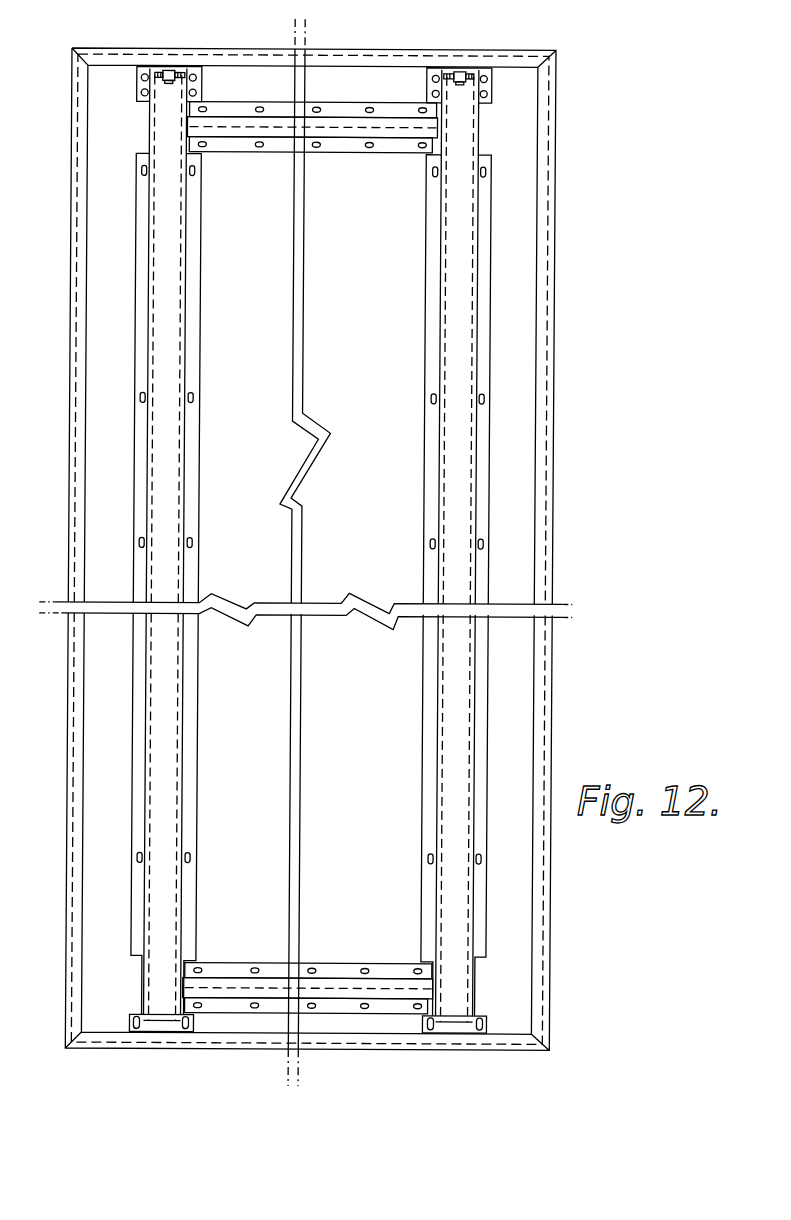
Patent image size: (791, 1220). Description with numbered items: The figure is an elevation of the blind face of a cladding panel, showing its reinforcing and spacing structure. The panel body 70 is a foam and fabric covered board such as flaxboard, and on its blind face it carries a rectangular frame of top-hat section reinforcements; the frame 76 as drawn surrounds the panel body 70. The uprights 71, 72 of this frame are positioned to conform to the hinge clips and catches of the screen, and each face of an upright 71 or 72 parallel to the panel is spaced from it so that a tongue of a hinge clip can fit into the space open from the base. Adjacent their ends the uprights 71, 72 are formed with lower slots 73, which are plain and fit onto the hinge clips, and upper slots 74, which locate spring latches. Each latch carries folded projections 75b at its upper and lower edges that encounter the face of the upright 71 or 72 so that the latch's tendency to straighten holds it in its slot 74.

The panel body 70 is at (389, 243).
The upright 71 is at (457, 440).
The upright 72 is at (172, 443).
The lower slot 73 is at (158, 1007).
The upper slot 74 is at (172, 70).
The folded projection 75b is at (165, 70).
The outer frame 76 is at (500, 1040).